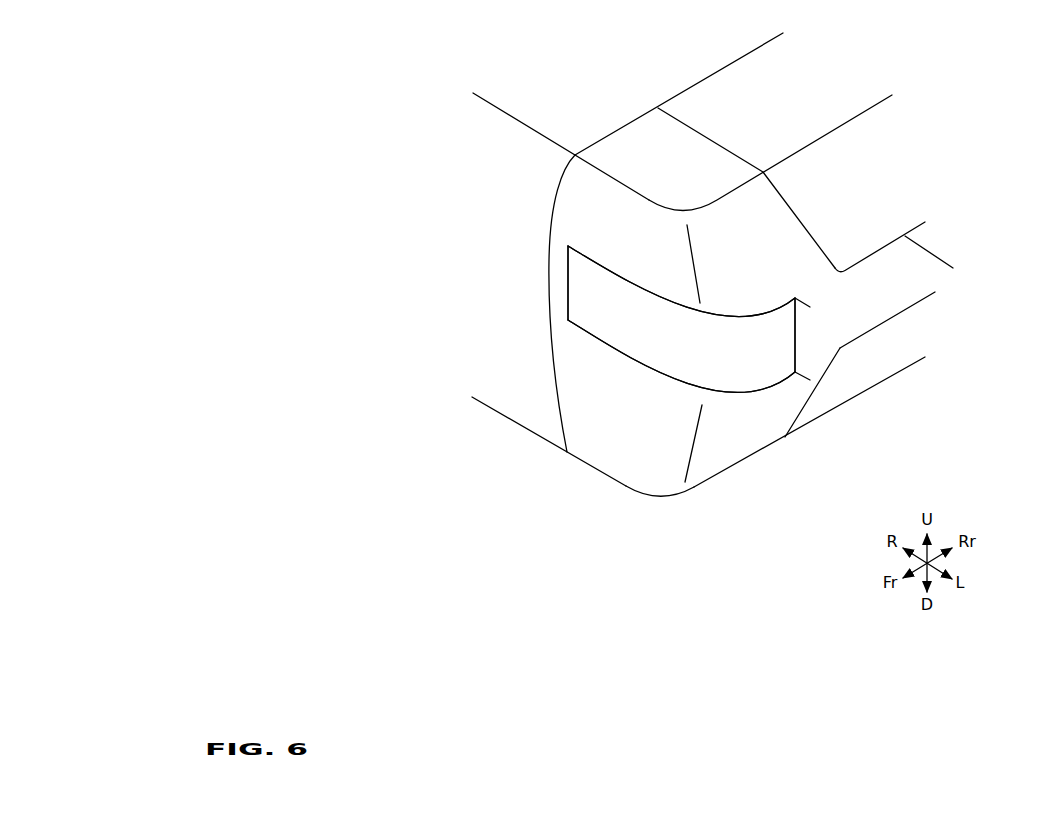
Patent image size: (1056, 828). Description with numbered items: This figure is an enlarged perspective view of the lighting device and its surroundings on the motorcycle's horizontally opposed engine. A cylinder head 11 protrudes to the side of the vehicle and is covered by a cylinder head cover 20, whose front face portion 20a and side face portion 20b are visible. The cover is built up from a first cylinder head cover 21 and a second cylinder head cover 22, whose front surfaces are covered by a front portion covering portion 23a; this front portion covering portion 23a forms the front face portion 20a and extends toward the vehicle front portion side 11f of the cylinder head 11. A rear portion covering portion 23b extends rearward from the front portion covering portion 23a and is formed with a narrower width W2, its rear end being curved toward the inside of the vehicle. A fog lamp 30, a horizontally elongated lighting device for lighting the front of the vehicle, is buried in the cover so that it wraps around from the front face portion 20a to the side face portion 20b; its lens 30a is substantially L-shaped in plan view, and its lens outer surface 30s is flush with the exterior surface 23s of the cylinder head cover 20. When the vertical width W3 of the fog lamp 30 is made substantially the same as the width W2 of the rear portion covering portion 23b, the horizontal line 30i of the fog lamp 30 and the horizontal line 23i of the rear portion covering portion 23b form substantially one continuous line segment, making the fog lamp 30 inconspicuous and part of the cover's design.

The cylinder head 11 is at (547, 115).
The vehicle front portion side of the cylinder head 11f is at (517, 235).
The first cylinder head cover 21 is at (795, 83).
The exterior surface of the cylinder head cover 23s is at (618, 225).
The front portion covering portion 23a is at (712, 198).
The horizontal line of the rear portion covering portion 23i is at (882, 250).
The rear portion covering portion 23b is at (908, 270).
The second cylinder head cover 22 is at (888, 357).
The cylinder head cover 20 is at (623, 498).
The front face portion 20a is at (610, 408).
The side face portion 20b is at (843, 315).
The fog lamp 30 is at (593, 318).
The lens 30a is at (592, 297).
The lens outer surface 30s is at (677, 353).
The horizontal line of the fog lamp 30i is at (758, 313).
The width of the rear portion covering portion W2 is at (952, 269).
The width in the vertical direction of the fog lamp W3 is at (808, 308).